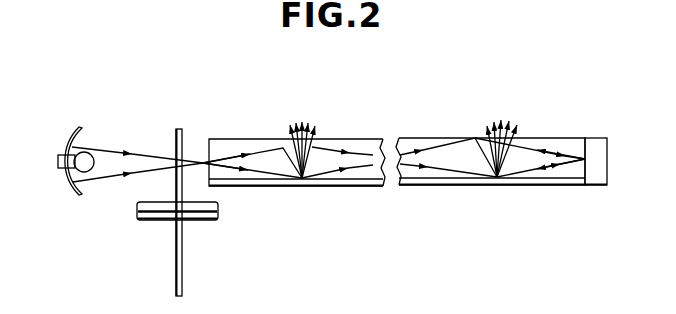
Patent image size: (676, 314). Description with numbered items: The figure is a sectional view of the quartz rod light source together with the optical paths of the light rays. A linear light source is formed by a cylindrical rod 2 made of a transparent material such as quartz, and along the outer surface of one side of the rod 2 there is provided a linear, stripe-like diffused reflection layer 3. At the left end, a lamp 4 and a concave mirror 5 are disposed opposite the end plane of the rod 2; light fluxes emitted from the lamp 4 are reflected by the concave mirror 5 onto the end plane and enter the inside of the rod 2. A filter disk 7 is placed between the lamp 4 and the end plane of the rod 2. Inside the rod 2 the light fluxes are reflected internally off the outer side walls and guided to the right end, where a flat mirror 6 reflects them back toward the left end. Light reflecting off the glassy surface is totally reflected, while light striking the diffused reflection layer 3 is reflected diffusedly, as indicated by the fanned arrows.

The cylindrical rod 2 is at (548, 139).
The diffused reflection layer 3 is at (433, 186).
The lamp 4 is at (93, 152).
The concave mirror 5 is at (71, 151).
The flat mirror 6 is at (600, 138).
The filter disk 7 is at (182, 270).